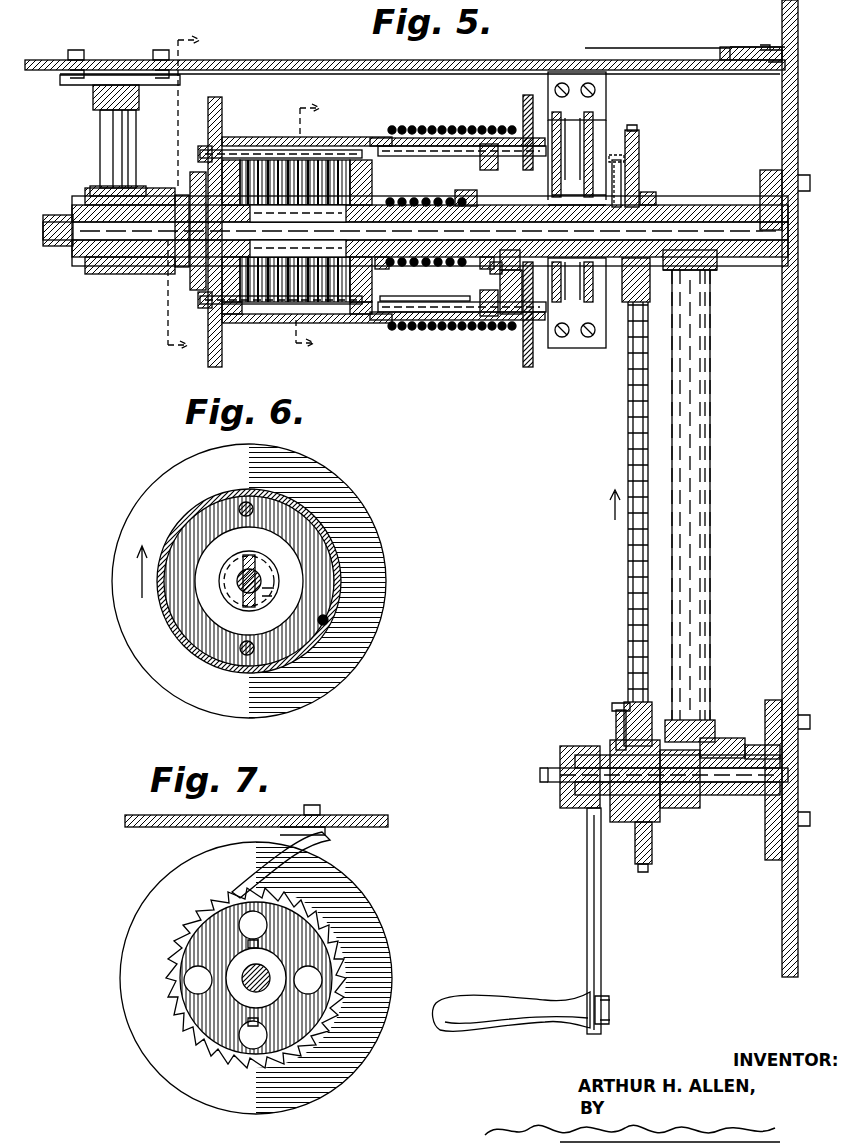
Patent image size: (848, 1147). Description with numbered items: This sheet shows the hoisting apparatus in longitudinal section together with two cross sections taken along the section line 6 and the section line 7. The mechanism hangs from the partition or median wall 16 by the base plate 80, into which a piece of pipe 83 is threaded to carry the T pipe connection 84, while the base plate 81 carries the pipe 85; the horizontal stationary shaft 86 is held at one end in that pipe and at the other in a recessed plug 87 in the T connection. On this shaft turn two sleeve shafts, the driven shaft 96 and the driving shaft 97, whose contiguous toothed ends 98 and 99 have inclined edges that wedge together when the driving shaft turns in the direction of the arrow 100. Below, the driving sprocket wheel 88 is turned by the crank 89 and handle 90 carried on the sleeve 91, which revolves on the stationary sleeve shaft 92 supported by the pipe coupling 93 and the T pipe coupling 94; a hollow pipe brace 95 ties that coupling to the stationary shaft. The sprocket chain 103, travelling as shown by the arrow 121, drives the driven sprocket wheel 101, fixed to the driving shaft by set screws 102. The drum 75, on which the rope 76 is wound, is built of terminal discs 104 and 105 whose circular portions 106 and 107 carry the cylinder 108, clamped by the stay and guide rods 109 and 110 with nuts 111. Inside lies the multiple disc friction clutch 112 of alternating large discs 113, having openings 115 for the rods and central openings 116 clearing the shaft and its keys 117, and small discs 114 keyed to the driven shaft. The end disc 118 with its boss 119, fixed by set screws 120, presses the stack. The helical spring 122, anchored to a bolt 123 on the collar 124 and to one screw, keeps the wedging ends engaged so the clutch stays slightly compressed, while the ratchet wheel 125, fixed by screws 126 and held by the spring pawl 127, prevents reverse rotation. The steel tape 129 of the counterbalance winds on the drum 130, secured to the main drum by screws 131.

In FIG. 5, the section line 6— 6 is at (303, 225).
In FIG. 5, the section line 7— 7 is at (180, 193).
In FIG. 5, the partition or median wall 16 is at (688, 62).
In FIG. 7, the partition or median wall 16 is at (238, 815).
In FIG. 5, the drum 75 is at (425, 286).
In FIG. 5, the cable or rope 76 is at (442, 320).
In FIG. 5, the base plate 80 is at (92, 96).
In FIG. 5, the base plate 81 is at (780, 160).
In FIG. 5, the piece of pipe 83 is at (115, 128).
In FIG. 5, the T pipe connection 84 is at (96, 258).
In FIG. 5, the pipe 85 is at (700, 210).
In FIG. 5, the horizontal stationary shaft 86 is at (648, 222).
In FIG. 6, the horizontal stationary shaft 86 is at (230, 595).
In FIG. 7, the horizontal stationary shaft 86 is at (248, 990).
In FIG. 5, the recessed plug 87 is at (50, 216).
In FIG. 5, the driving sprocket wheel 88 is at (654, 848).
In FIG. 5, the crank 89 is at (601, 905).
In FIG. 5, the handle 90 is at (518, 1008).
In FIG. 5, the sleeve 91 is at (598, 748).
In FIG. 5, the stationary sleeve shaft 92 is at (706, 800).
In FIG. 5, the pipe coupling 93 is at (748, 758).
In FIG. 5, the T pipe coupling 94 is at (720, 745).
In FIG. 5, the hollow pipe brace 95 is at (690, 506).
In FIG. 5, the driven sleeve shaft 96 is at (122, 258).
In FIG. 6, the driven sleeve shaft 96 is at (262, 574).
In FIG. 7, the driven sleeve shaft 96 is at (262, 990).
In FIG. 5, the driving sleeve shaft 97 is at (458, 198).
In FIG. 5, the end of driven shaft 98 is at (396, 165).
In FIG. 5, the end of driving shaft 99 is at (388, 200).
In FIG. 5, the arrow 100 is at (700, 272).
In FIG. 6, the arrow 100 is at (140, 558).
In FIG. 5, the driven sprocket wheel 101 is at (640, 160).
In FIG. 5, the set screws 102 is at (622, 268).
In FIG. 5, the sprocket chain 103 is at (628, 442).
In FIG. 5, the terminal disc 104 is at (178, 282).
In FIG. 5, the terminal disc 105 is at (500, 340).
In FIG. 5, the circular portion 106 is at (214, 360).
In FIG. 5, the circular portion 107 is at (505, 312).
In FIG. 5, the cylinder 108 is at (408, 322).
In FIG. 6, the cylinder 108 is at (323, 620).
In FIG. 5, the stay and guide rod 109 is at (432, 150).
In FIG. 6, the stay and guide rod 109 is at (280, 520).
In FIG. 5, the stay and guide rod 110 is at (366, 318).
In FIG. 6, the stay and guide rod 110 is at (323, 626).
In FIG. 5, the nuts 111 is at (528, 368).
In FIG. 5, the multiple disc friction clutch 112 is at (250, 316).
In FIG. 5, the large discs 113 is at (268, 140).
In FIG. 5, the small discs 114 is at (302, 172).
In FIG. 6, the small discs 114 is at (220, 620).
In FIG. 6, the openings 115 is at (244, 656).
In FIG. 6, the central openings 116 is at (243, 590).
In FIG. 5, the keys 117 is at (296, 260).
In FIG. 6, the keys 117 is at (272, 596).
In FIG. 5, the end disc 118 is at (312, 318).
In FIG. 5, the boss 119 is at (380, 190).
In FIG. 5, the set screws 120 is at (358, 345).
In FIG. 5, the arrow 121 is at (603, 521).
In FIG. 5, the helical spring 122 is at (395, 265).
In FIG. 5, the bolt 123 is at (480, 168).
In FIG. 5, the collar 124 is at (464, 261).
In FIG. 5, the ratchet wheel 125 is at (192, 300).
In FIG. 7, the ratchet wheel 125 is at (185, 926).
In FIG. 7, the screws 126 is at (245, 1048).
In FIG. 7, the spring pawl 127 is at (255, 866).
In FIG. 5, the steel tape 129 is at (588, 72).
In FIG. 5, the drum 130 is at (572, 348).
In FIG. 5, the screws 131 is at (492, 270).